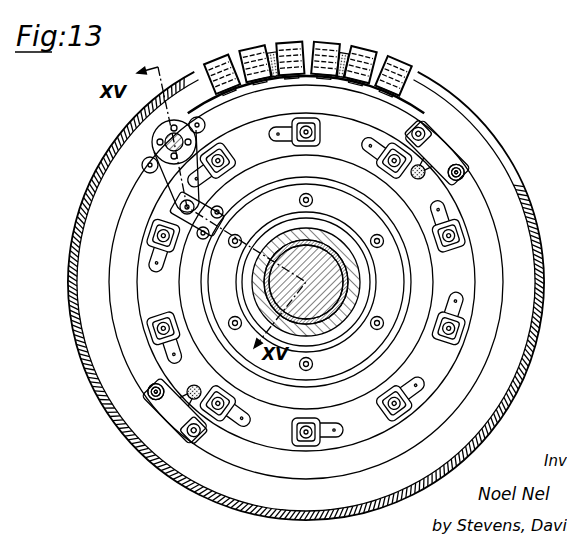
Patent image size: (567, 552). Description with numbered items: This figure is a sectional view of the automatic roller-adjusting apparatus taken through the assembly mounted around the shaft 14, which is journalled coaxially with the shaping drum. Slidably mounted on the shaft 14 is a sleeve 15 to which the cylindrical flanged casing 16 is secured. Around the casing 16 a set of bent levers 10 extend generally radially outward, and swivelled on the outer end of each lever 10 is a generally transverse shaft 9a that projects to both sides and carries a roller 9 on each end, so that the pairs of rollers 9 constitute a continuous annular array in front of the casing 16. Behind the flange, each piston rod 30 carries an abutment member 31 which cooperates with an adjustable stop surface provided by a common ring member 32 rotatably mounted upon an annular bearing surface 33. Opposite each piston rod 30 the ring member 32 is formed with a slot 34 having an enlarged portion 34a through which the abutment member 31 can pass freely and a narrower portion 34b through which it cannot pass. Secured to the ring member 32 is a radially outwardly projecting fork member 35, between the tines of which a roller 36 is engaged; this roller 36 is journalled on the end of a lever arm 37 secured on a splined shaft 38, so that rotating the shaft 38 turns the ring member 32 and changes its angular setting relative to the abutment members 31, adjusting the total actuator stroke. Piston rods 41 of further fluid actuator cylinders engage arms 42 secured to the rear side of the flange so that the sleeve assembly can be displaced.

The roller 9 is at (219, 52).
The transverse shaft 9a is at (325, 42).
The bent lever 10 is at (275, 50).
The shaft 14 is at (330, 287).
The sleeve 15 is at (340, 308).
The cylindrical flanged casing 16 is at (212, 500).
The piston rod 30 is at (307, 126).
The abutment member 31 is at (318, 147).
The stop surface ring member 32 is at (262, 426).
The annular bearing surface 33 is at (337, 358).
The slot 34 is at (320, 136).
The enlarged slot portion 34a is at (323, 126).
The narrower slot portion 34b is at (283, 131).
The fork member 35 is at (167, 270).
The roller 36 is at (180, 206).
The lever arm 37 is at (148, 190).
The splined shaft 38 is at (178, 121).
The piston rod 41 is at (423, 143).
The arm 42 is at (458, 155).